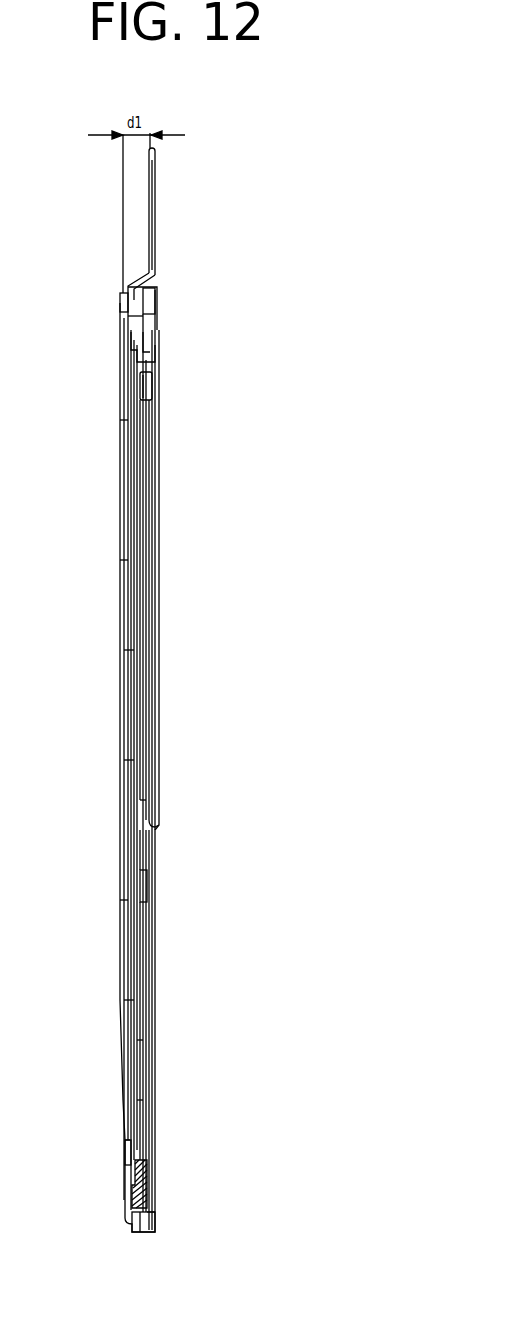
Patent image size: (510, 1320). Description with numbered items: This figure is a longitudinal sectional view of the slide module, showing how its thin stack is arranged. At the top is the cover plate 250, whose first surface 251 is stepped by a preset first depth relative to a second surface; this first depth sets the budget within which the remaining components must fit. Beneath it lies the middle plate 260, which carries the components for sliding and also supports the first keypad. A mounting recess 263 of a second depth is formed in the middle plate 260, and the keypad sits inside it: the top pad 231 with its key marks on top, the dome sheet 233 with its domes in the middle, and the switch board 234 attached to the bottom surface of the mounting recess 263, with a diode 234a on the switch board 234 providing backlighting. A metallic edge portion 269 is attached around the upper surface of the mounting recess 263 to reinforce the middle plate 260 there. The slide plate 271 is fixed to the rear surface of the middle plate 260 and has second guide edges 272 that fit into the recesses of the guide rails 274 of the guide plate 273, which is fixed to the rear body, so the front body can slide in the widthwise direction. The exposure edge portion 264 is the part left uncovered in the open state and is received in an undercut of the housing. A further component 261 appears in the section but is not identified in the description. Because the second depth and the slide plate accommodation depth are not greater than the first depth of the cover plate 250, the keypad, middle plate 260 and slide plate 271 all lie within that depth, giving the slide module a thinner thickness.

The cover plate 250 is at (157, 172).
The first surface 251 is at (128, 300).
The middle plate 260 is at (157, 303).
The frame side wall 261 is at (150, 311).
The guide rails 274 is at (153, 357).
The second guide edges 272 is at (152, 388).
The guide plate 273 is at (150, 508).
The slide plate 271 is at (150, 582).
The diode 234a is at (147, 885).
The mounting recess 263 is at (150, 1023).
The switch board 234 is at (147, 1060).
The dome sheet 233 is at (145, 1112).
The top pad 231 is at (138, 1153).
The metallic edge portion 269 is at (132, 1198).
The exposure edge portion 264 is at (153, 1225).